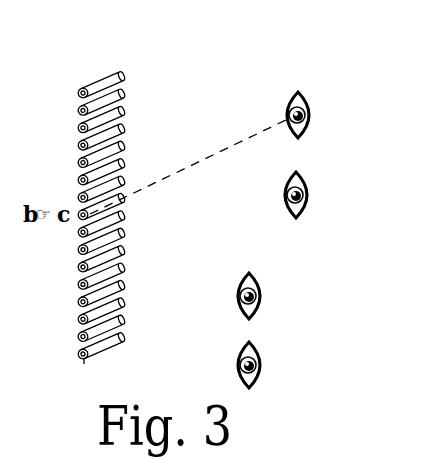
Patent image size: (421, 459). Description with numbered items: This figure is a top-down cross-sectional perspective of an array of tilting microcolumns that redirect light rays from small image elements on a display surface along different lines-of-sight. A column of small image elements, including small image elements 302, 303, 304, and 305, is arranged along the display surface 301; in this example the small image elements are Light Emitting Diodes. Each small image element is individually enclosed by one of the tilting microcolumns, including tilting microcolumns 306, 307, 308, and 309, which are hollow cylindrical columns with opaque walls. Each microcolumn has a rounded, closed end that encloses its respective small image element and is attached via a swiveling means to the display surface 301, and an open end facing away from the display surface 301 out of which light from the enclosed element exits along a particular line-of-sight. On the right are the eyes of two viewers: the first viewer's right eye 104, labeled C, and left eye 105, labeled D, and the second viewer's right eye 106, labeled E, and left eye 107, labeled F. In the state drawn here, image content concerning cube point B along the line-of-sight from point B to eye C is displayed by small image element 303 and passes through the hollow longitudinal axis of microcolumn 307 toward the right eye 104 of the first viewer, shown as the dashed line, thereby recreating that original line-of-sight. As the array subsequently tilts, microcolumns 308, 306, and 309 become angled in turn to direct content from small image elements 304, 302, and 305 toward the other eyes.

The display surface 301 is at (83, 84).
The small image element 302 is at (80, 127).
The small image element 303 is at (79, 211).
The small image element 304 is at (80, 252).
The small image element 305 is at (80, 287).
The tilting microcolumn 306 is at (117, 115).
The tilting microcolumn 307 is at (122, 194).
The tilting microcolumn 308 is at (127, 227).
The tilting microcolumn 309 is at (115, 271).
The right eye 104 is at (312, 92).
The left eye 105 is at (313, 175).
The right eye 106 is at (267, 277).
The left eye 107 is at (270, 375).